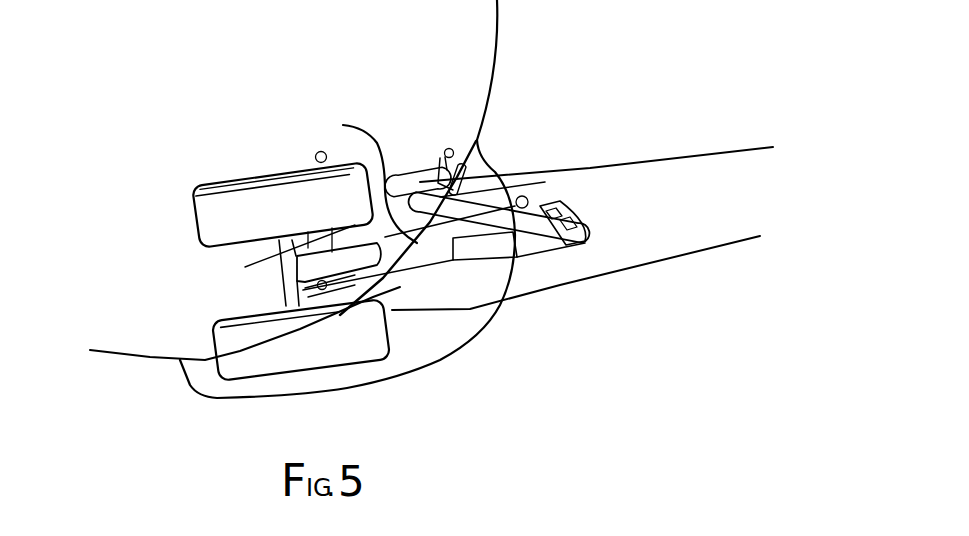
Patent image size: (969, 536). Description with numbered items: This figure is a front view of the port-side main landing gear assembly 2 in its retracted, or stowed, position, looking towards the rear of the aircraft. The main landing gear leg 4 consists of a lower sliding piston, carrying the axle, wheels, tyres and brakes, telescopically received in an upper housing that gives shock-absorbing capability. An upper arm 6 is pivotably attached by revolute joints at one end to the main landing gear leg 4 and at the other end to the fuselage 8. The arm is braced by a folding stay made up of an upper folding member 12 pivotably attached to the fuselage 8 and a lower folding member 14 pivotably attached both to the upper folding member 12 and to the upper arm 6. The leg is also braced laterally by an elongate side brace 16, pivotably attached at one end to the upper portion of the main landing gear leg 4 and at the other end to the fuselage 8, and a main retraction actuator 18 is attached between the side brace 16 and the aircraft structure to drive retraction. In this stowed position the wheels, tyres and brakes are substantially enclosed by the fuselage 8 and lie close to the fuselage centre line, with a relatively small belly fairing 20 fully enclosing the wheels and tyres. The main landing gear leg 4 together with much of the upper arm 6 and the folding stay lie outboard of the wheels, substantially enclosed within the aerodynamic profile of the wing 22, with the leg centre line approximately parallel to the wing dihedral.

The main landing gear assembly 2 is at (388, 122).
The main landing gear leg 4 is at (423, 258).
The upper arm 6 is at (538, 218).
The fuselage 8 is at (488, 33).
The upper folding member 12 is at (452, 148).
The lower folding member 14 is at (515, 200).
The side brace 16 is at (401, 211).
The main retraction actuator 18 is at (297, 262).
The belly fairing 20 is at (433, 363).
The wing 22 is at (623, 257).